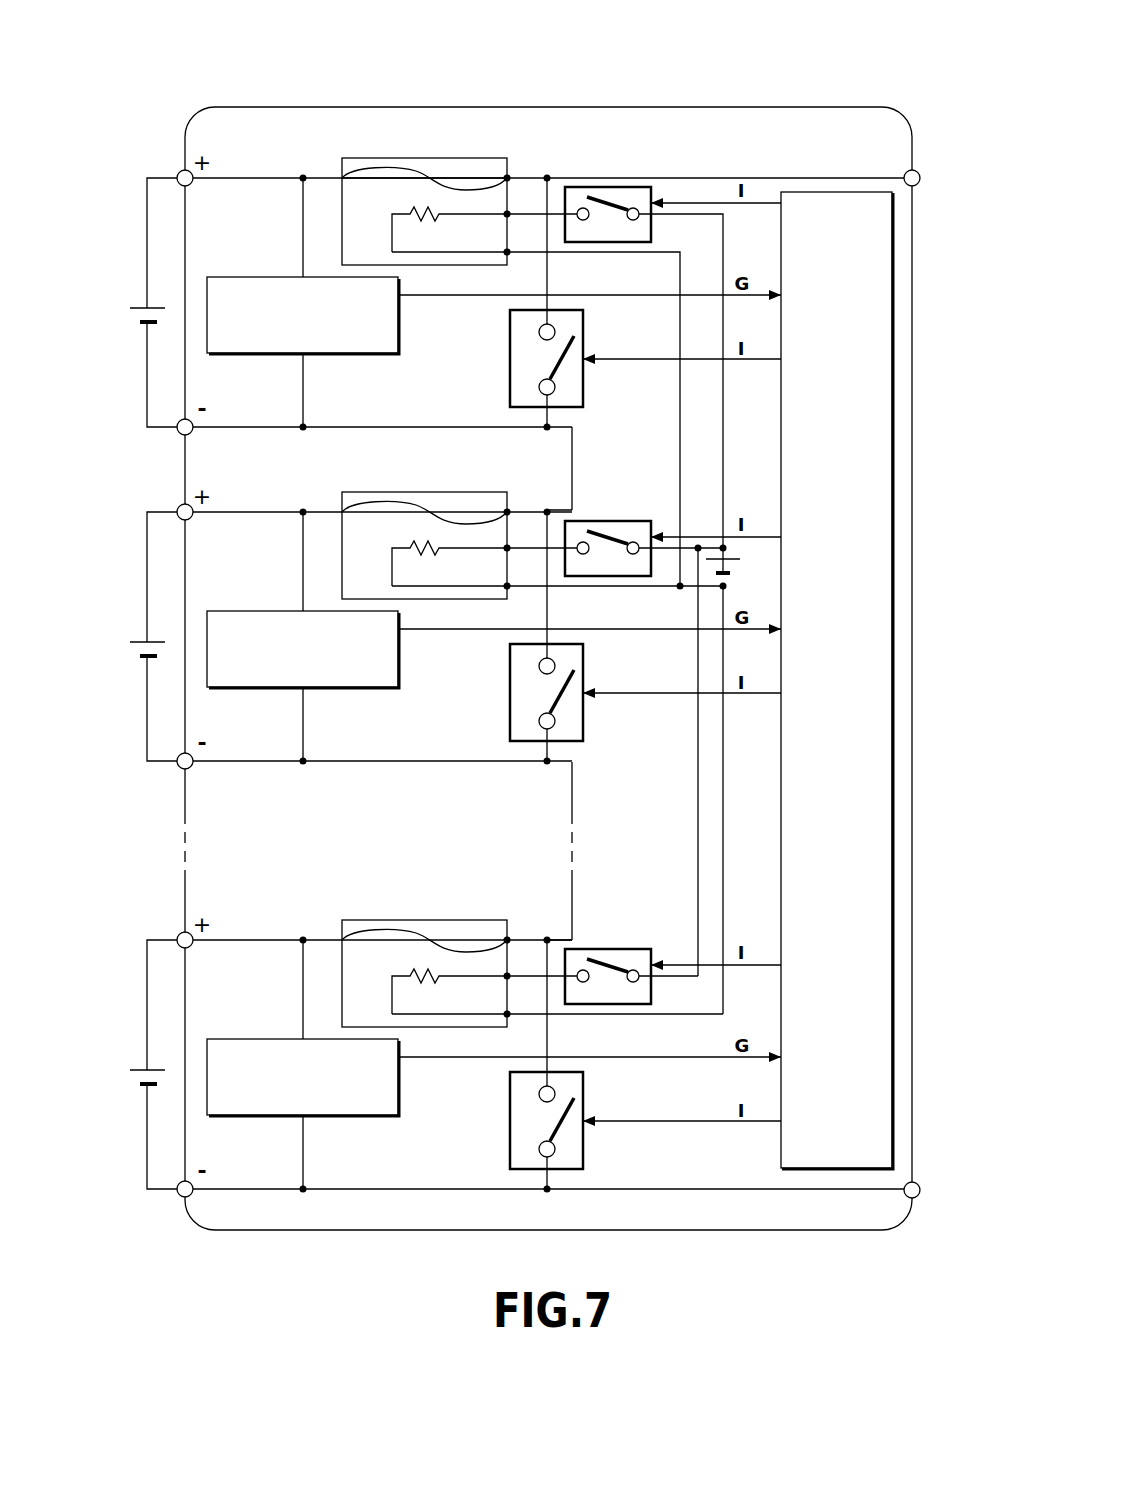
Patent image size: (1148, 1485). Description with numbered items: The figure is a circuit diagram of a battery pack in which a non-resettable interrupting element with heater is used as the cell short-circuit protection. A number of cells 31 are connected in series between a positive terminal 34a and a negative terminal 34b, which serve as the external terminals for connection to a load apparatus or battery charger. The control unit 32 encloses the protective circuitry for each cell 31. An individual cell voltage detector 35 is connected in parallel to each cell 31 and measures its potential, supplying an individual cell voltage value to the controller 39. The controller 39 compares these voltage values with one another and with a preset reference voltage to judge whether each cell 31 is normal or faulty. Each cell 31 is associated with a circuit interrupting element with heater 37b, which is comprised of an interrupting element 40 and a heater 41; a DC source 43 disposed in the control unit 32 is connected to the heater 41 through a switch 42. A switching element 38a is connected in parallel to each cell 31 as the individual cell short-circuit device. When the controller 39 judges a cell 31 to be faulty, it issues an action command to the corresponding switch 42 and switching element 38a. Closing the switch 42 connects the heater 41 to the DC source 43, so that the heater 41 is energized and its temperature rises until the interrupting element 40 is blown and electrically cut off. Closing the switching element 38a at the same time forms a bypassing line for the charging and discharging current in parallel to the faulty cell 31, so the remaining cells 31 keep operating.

The control unit 32 is at (590, 88).
The cell 31 is at (140, 1070).
The positive terminal 34a is at (918, 186).
The negative terminal 34b is at (918, 1198).
The individual cell voltage detector 35 is at (368, 355).
The non-resettable circuit interrupting element with heater 37b is at (486, 153).
The resettable switching element 38a is at (584, 385).
The controller 39 is at (894, 780).
The interrupting element 40 is at (381, 165).
The heater 41 is at (407, 222).
The switch 42 is at (622, 186).
The DC source 43 is at (742, 560).